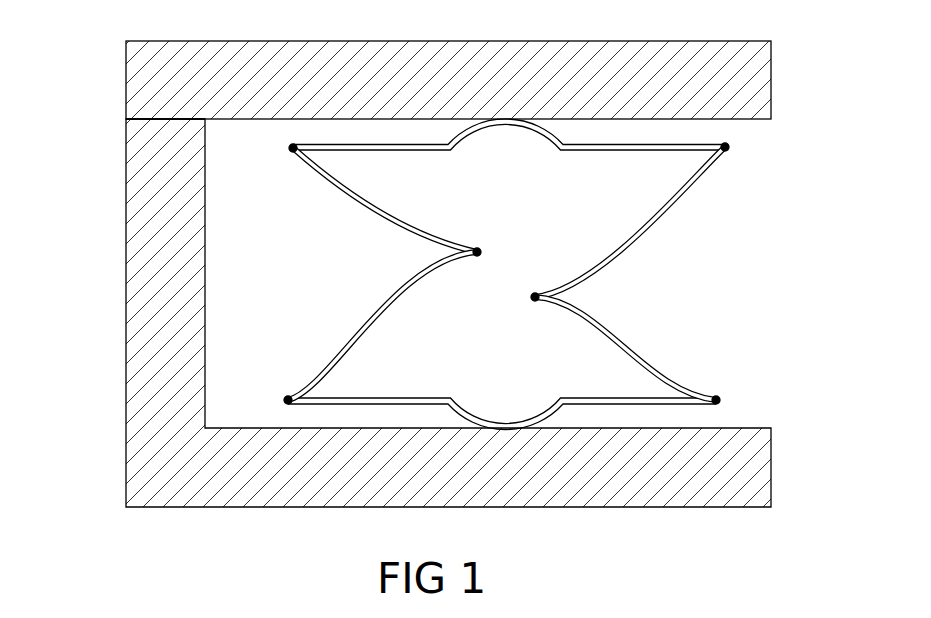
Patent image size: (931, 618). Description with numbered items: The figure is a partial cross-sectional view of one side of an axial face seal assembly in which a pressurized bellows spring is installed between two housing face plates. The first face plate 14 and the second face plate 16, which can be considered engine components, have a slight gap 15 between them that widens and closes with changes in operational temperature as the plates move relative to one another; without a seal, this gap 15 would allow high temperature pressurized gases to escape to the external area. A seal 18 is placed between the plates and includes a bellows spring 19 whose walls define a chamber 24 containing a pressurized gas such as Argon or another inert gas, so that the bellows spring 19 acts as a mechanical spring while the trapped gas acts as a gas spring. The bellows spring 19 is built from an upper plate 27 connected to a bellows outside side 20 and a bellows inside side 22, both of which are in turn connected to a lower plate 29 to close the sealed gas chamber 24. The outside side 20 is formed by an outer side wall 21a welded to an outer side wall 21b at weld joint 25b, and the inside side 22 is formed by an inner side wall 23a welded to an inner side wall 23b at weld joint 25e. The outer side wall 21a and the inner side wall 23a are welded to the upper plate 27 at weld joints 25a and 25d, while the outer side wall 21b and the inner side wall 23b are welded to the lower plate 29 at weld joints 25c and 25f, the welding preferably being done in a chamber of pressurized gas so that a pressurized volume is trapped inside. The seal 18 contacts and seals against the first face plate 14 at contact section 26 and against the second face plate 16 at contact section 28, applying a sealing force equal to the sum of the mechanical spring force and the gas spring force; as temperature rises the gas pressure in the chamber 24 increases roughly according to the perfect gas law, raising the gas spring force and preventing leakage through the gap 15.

The first face plate 14 is at (757, 75).
The gap 15 is at (122, 119).
The second face plate 16 is at (276, 490).
The seal 18 is at (676, 268).
The bellows spring 19 is at (378, 281).
The bellows outside side 20 is at (659, 222).
The outer side wall 21a is at (700, 164).
The outer side wall 21b is at (698, 393).
The bellows inside side 22 is at (372, 313).
The inner side wall 23a is at (352, 184).
The inner side wall 23b is at (323, 372).
The chamber 24 is at (519, 206).
The weld joint 25a is at (732, 150).
The weld joint 25b is at (533, 298).
The weld joint 25c is at (722, 401).
The weld joint 25d is at (291, 151).
The weld joint 25e is at (483, 253).
The weld joint 25f is at (285, 400).
The contact section 26 is at (507, 133).
The upper plate 27 is at (697, 150).
The contact section 28 is at (504, 424).
The lower plate 29 is at (708, 404).